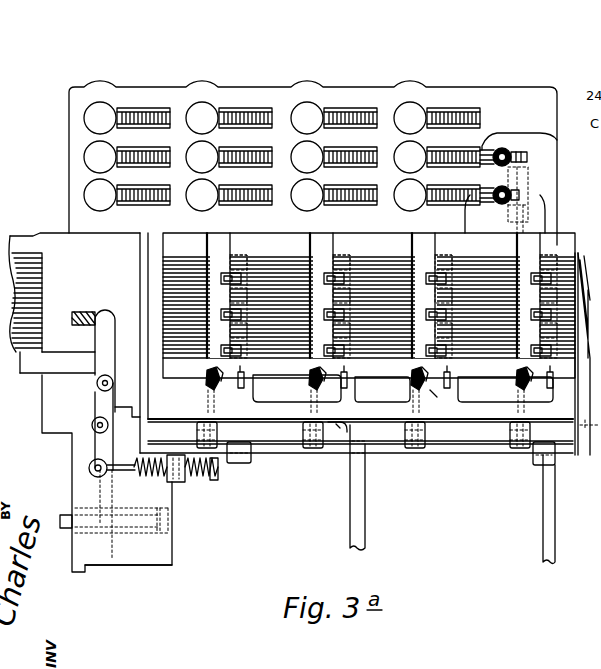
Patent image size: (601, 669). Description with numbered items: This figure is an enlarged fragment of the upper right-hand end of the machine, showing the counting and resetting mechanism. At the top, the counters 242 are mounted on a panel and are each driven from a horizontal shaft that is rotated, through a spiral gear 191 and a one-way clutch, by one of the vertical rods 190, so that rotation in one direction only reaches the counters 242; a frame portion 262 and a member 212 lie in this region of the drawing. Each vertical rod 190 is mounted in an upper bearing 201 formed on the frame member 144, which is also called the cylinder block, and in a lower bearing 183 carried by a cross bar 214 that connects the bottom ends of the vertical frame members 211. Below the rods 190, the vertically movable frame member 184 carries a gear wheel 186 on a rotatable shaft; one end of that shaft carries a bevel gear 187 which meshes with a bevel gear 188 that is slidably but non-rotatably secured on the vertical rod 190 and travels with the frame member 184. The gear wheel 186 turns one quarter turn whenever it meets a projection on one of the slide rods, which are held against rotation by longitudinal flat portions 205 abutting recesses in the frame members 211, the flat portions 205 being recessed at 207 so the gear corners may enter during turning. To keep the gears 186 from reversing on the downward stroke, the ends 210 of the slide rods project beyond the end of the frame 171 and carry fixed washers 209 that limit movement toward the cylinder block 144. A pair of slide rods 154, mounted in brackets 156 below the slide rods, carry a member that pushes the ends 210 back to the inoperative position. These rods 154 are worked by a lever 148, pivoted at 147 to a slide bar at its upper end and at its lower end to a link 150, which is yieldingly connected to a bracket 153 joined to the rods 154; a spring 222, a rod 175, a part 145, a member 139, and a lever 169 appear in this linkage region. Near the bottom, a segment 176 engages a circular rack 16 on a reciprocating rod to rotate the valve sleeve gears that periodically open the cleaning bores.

The counter 242 is at (82, 148).
The keyboard panel 262 is at (498, 90).
The spiral gear 191 is at (528, 157).
The upper bearing 201 is at (528, 175).
The vertical frame member 211 is at (240, 236).
The frame 212 is at (157, 236).
The vertical rod 190 is at (207, 242).
The fixed washer 209 is at (566, 240).
The end of slide rod 210 is at (566, 254).
The frame member 144 is at (57, 236).
The stop 145 is at (78, 313).
The lever 139 is at (113, 320).
The pivot 147 is at (97, 384).
The lever 148 is at (97, 412).
The cross bar 214 is at (203, 374).
The bevel gear 188 is at (410, 390).
The longitudinal flat portion 205 is at (247, 372).
The recess 207 is at (399, 359).
The gear wheel 186 is at (452, 374).
The bevel gear 187 is at (443, 401).
The vertically movable frame member 184 is at (466, 444).
The lower bearing 183 is at (219, 428).
The slide rod 154 is at (333, 455).
The bracket 156 is at (247, 461).
The lever 169 is at (350, 498).
The frame 171 is at (554, 490).
The link 150 is at (128, 462).
The spring 222 is at (95, 480).
The bracket 153 is at (182, 483).
The rod 175 is at (100, 497).
The circular rack 16 is at (165, 523).
The segment 176 is at (128, 577).